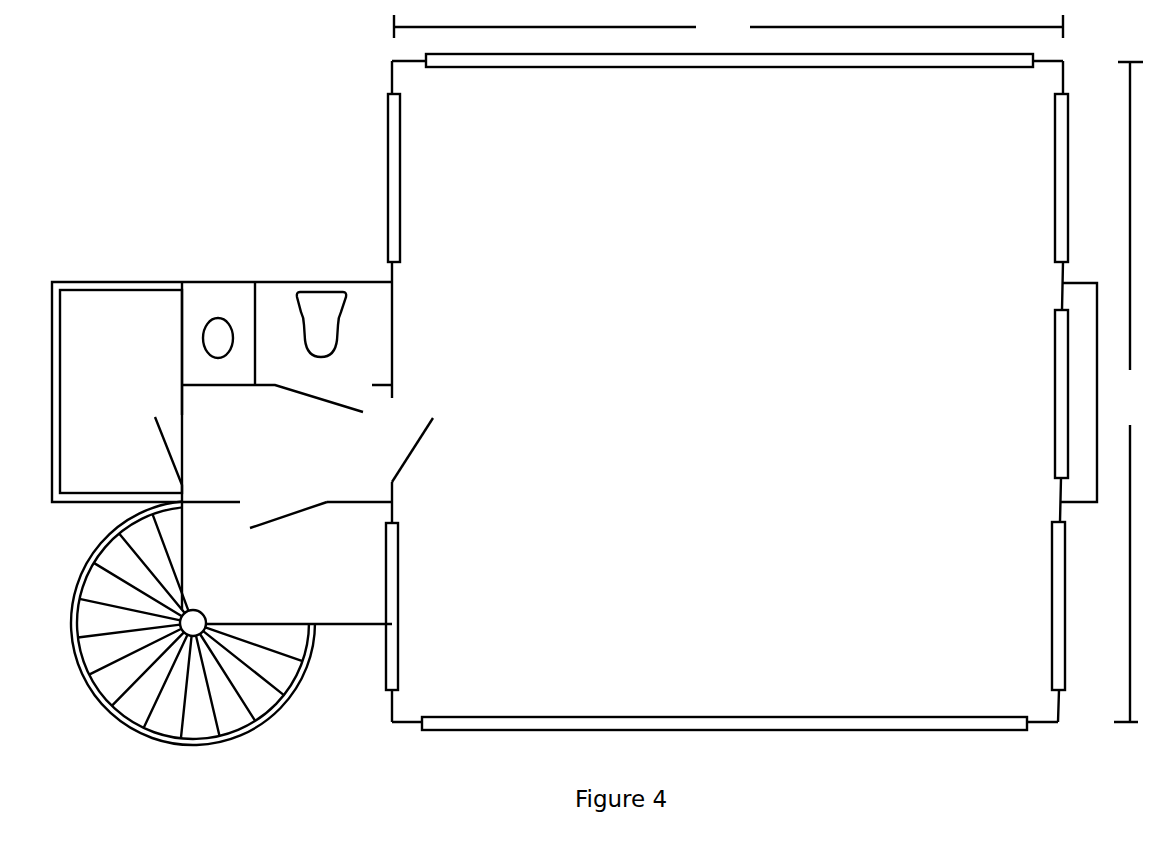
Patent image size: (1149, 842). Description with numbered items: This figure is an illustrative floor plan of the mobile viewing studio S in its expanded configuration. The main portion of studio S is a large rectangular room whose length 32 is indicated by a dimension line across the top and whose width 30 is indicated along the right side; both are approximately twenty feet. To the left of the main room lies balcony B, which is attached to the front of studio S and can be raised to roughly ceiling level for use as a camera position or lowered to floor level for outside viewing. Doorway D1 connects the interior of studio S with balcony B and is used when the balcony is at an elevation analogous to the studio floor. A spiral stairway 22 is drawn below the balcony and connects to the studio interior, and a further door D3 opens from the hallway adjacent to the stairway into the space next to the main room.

The studio S is at (508, 735).
The balcony B is at (92, 275).
The doorway D1 is at (160, 447).
The third door D3 is at (303, 518).
The stairway 22 is at (130, 735).
The length 32 is at (728, 29).
The width 30 is at (1129, 392).